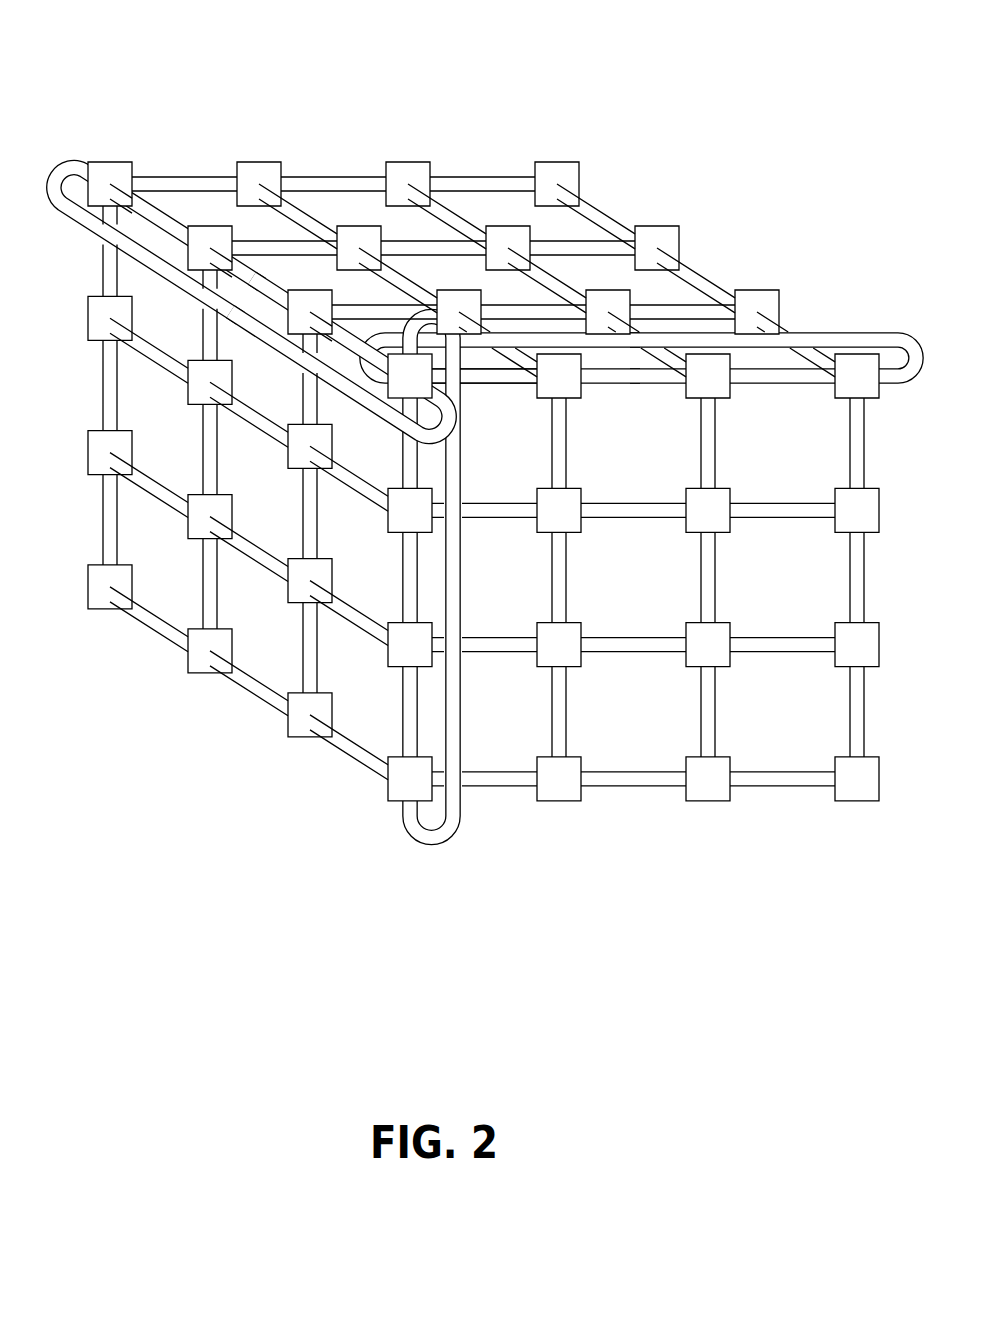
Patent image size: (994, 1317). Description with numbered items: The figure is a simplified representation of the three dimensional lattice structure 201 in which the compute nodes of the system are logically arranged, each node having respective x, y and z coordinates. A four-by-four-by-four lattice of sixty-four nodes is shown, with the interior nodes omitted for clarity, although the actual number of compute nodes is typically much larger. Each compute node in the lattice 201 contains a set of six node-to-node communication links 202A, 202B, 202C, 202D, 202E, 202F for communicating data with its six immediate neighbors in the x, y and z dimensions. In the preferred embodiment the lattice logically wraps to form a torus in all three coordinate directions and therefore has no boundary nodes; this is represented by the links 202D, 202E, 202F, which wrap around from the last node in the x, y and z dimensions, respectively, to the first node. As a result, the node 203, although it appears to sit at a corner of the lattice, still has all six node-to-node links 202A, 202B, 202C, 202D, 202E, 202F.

The three dimensional lattice structure 201 is at (594, 88).
The node-to-node communication link 202A is at (474, 384).
The node-to-node communication link 202B is at (402, 467).
The node-to-node communication link 202C is at (355, 337).
The node-to-node communication link 202D is at (878, 333).
The node-to-node communication link 202E is at (442, 842).
The node-to-node communication link 202F is at (46, 170).
The node 203 is at (402, 378).